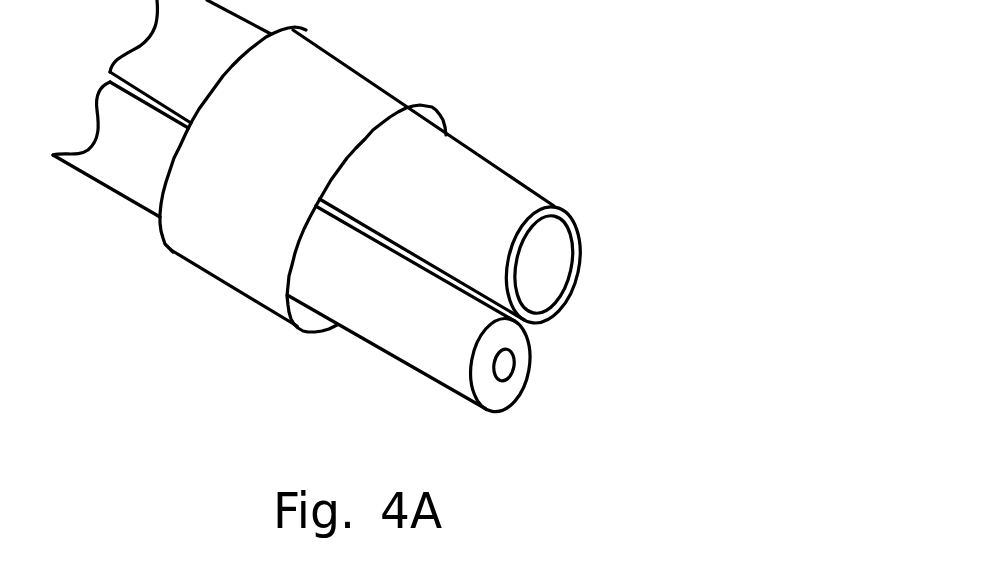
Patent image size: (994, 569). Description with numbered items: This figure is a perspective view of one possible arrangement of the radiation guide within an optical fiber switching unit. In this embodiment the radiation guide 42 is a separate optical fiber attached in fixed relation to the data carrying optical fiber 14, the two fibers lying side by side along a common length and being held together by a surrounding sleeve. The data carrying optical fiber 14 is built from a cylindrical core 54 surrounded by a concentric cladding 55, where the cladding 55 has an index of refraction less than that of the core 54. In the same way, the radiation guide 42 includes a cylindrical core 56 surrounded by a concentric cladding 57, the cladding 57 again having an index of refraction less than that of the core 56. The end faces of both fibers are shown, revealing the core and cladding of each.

The data carrying optical fiber 14 is at (408, 355).
The radiation guide 42 is at (508, 198).
The cylindrical core 54 is at (507, 362).
The concentric cladding 55 is at (500, 393).
The cylindrical core 56 is at (552, 263).
The concentric cladding 57 is at (572, 222).